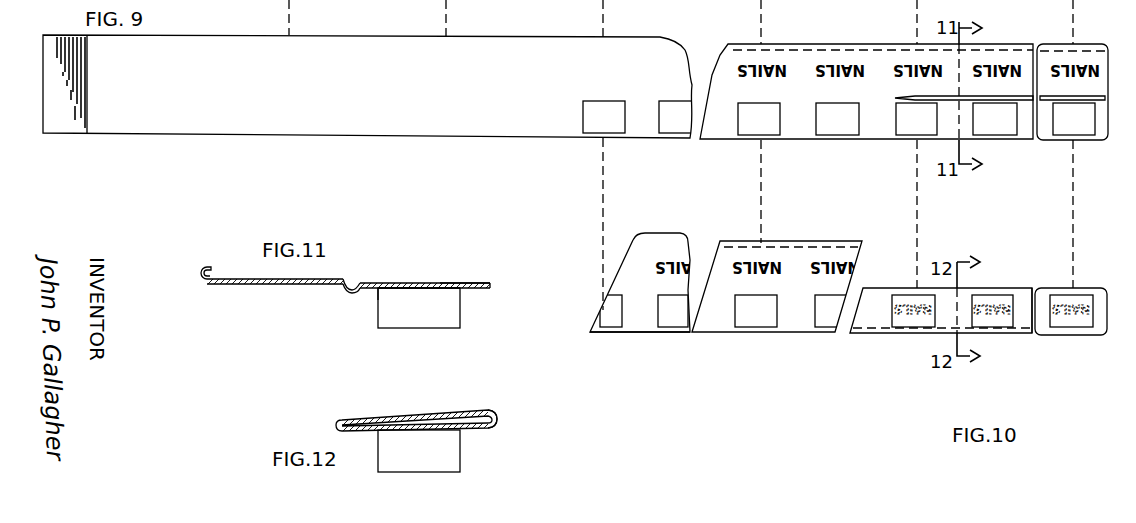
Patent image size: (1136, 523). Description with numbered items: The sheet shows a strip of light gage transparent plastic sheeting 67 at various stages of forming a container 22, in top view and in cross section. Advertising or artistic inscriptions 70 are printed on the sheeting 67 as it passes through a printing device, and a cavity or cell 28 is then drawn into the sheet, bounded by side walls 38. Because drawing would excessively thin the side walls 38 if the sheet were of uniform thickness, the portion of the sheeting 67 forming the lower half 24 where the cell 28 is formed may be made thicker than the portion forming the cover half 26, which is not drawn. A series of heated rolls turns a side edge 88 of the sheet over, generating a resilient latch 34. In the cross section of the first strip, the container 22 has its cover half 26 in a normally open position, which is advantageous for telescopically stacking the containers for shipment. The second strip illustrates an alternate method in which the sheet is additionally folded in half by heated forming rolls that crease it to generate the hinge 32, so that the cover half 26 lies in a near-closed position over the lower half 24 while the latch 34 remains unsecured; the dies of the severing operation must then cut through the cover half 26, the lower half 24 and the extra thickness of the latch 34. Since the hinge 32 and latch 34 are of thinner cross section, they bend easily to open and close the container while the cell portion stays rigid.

In FIG. 11, the container 22 is at (462, 312).
In FIG. 11, the lower half 24 is at (484, 281).
In FIG. 12, the lower half 24 is at (462, 450).
In FIG. 11, the cover half 26 is at (290, 286).
In FIG. 12, the cover half 26 is at (438, 416).
In FIG. 9, the cell 28 is at (593, 128).
In FIG. 10, the cell 28 is at (770, 315).
In FIG. 11, the cell 28 is at (392, 308).
In FIG. 9, the hinge 32 is at (1020, 100).
In FIG. 10, the hinge 32 is at (1020, 288).
In FIG. 11, the hinge 32 is at (349, 281).
In FIG. 11, the latch 34 is at (200, 268).
In FIG. 12, the latch 34 is at (496, 417).
In FIG. 11, the side walls 38 is at (378, 297).
In FIG. 10, the plastic sheeting 67 is at (655, 325).
In FIG. 11, the plastic sheeting 67 is at (418, 282).
In FIG. 9, the printed inscriptions 70 is at (262, 70).
In FIG. 9, the side edge 88 is at (805, 46).
In FIG. 10, the side edge 88 is at (800, 245).